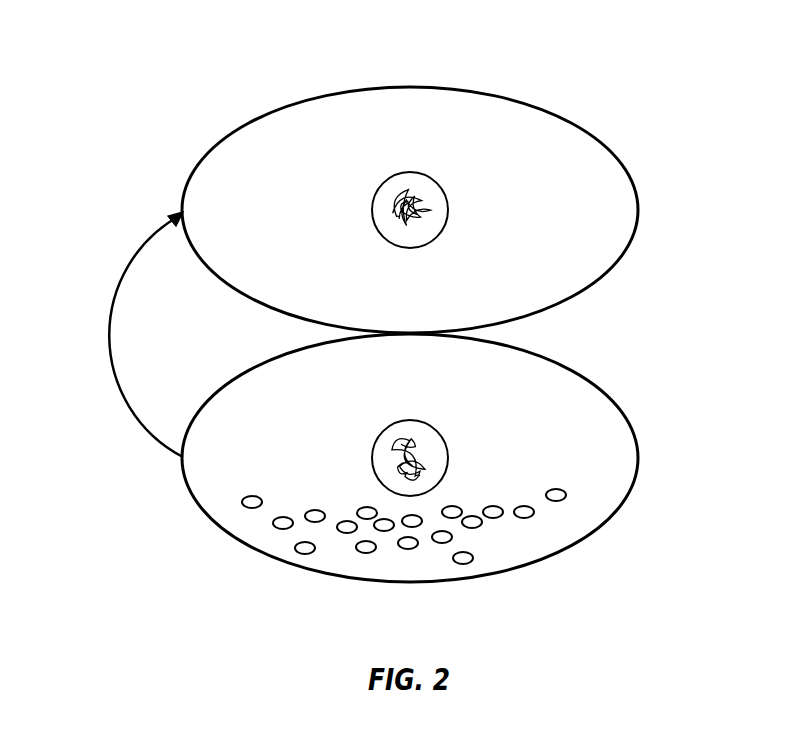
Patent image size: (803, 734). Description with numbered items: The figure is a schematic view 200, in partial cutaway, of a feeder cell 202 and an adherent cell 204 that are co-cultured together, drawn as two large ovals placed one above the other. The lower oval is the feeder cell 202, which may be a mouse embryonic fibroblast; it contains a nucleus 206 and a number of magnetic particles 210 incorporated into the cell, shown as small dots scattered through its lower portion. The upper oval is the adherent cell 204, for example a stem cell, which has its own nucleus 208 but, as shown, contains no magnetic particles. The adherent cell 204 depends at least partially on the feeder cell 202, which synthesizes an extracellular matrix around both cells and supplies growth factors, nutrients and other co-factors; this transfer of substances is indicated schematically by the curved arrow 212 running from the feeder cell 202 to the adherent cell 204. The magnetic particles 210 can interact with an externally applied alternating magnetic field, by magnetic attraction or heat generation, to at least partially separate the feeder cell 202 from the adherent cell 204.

The schematic view 200 is at (143, 119).
The feeder cell 202 is at (637, 458).
The adherent cell 204 is at (637, 211).
The nucleus 206 is at (372, 457).
The nucleus 208 is at (372, 209).
The magnetic particles 210 is at (474, 558).
The arrow 212 is at (108, 336).